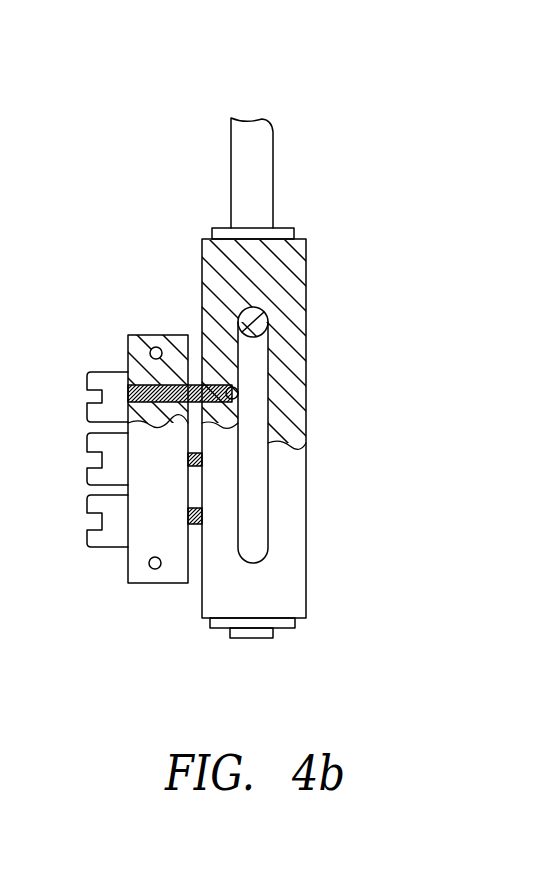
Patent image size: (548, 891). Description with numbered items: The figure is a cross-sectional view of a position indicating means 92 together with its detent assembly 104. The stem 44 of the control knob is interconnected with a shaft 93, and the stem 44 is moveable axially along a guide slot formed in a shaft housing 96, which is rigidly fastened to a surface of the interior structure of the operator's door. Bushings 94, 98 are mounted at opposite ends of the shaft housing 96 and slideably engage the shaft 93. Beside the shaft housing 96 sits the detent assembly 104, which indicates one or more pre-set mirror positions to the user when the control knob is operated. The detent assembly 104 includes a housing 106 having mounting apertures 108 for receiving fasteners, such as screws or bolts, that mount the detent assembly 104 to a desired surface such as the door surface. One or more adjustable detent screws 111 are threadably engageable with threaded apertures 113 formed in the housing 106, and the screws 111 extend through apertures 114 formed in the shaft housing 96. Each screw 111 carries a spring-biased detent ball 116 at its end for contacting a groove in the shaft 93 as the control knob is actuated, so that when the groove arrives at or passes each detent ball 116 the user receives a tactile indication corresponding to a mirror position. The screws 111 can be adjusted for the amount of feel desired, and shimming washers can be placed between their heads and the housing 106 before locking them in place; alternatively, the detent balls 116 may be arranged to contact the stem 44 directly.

The position indicating means 92 is at (283, 75).
The shaft 93 is at (258, 168).
The bushing 94 is at (284, 226).
The shaft housing 96 is at (288, 331).
The stem 44 is at (266, 312).
The bushing 98 is at (284, 629).
The detent assembly 104 is at (125, 280).
The housing 106 is at (150, 335).
The mounting apertures 108 is at (160, 347).
The adjustable detent screws 111 is at (130, 387).
The threaded apertures 113 is at (128, 346).
The apertures 114 is at (223, 368).
The spring-biased detent ball 116 is at (238, 391).